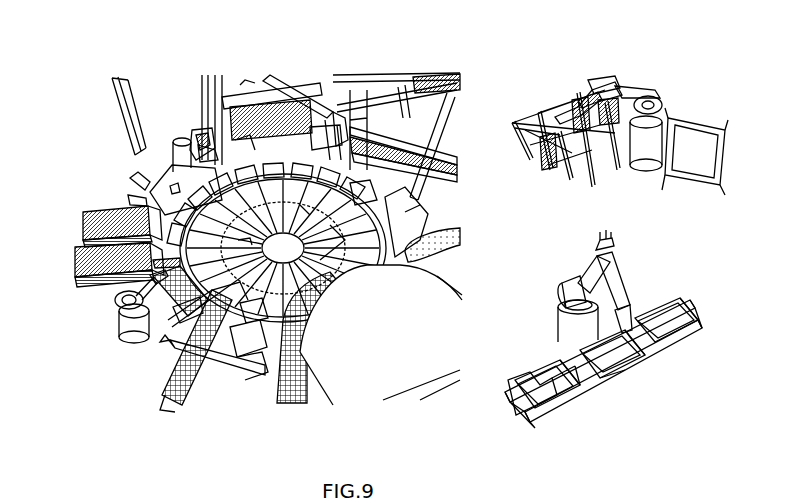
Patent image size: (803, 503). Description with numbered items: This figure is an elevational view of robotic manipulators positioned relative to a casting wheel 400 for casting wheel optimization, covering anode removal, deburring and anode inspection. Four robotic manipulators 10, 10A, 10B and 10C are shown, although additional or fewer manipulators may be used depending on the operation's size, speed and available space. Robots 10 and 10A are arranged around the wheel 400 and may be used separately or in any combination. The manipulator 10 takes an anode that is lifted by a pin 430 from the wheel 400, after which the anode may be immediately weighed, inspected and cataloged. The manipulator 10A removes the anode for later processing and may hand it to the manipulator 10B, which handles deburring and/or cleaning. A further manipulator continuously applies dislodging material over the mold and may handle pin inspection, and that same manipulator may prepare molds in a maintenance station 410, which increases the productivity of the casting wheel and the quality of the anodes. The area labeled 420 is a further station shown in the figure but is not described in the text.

The manipulator 10 is at (190, 136).
The manipulator 10A is at (112, 320).
The manipulator 10B is at (620, 90).
The manipulator 10C is at (620, 265).
The wheel 400 is at (343, 215).
The maintenance station 410 is at (603, 325).
The rack station 420 is at (620, 123).
The pin 430 is at (220, 167).